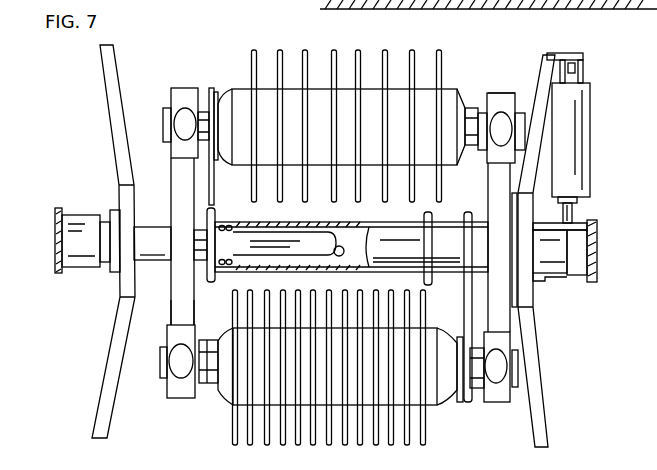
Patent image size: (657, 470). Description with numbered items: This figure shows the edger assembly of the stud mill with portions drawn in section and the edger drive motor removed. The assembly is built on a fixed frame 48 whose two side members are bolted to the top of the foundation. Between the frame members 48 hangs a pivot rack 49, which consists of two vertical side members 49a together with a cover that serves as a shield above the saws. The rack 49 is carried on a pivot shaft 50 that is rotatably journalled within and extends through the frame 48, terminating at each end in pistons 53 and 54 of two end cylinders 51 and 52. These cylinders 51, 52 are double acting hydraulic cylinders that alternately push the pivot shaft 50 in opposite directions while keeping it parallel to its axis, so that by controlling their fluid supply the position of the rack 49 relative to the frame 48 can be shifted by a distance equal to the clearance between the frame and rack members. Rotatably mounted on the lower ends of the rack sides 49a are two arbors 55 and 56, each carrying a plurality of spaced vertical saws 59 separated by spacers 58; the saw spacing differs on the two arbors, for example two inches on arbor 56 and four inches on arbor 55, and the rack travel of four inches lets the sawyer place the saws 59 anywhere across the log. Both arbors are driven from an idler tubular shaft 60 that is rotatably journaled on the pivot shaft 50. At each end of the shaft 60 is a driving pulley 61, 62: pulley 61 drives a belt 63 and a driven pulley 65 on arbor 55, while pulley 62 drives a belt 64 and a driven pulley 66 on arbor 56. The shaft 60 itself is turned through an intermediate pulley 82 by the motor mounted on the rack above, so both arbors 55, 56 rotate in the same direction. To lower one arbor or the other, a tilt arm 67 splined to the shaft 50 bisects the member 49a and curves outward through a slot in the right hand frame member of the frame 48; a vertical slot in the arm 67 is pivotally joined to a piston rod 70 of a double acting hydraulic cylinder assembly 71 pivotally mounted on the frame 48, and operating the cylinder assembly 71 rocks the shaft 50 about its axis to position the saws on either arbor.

The fixed frame 48 is at (110, 345).
The pivot rack 49 is at (165, 181).
The vertical side members 49a is at (171, 315).
The pivot shaft 50 is at (341, 253).
The end cylinder 51 is at (592, 258).
The end cylinder 52 is at (57, 247).
The piston 53 is at (570, 275).
The piston 54 is at (100, 262).
The arbor 55 is at (522, 112).
The arbor 56 is at (516, 402).
The spacers 58 is at (302, 139).
The vertical saws 59 is at (358, 58).
The idler tubular shaft 60 is at (392, 229).
The driving pulley 61 is at (214, 217).
The driving pulley 62 is at (432, 215).
The belt 63 is at (214, 200).
The belt 64 is at (464, 306).
The driven pulley 65 is at (218, 94).
The driven pulley 66 is at (462, 402).
The tilt arm 67 is at (514, 222).
The piston rod 70 is at (573, 213).
The hydraulic cylinder assembly 71 is at (588, 172).
The intermediate pulley 82 is at (415, 279).